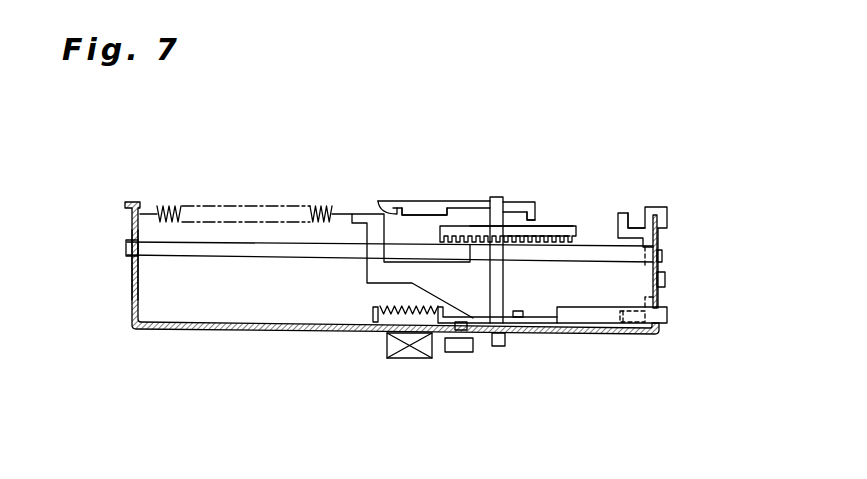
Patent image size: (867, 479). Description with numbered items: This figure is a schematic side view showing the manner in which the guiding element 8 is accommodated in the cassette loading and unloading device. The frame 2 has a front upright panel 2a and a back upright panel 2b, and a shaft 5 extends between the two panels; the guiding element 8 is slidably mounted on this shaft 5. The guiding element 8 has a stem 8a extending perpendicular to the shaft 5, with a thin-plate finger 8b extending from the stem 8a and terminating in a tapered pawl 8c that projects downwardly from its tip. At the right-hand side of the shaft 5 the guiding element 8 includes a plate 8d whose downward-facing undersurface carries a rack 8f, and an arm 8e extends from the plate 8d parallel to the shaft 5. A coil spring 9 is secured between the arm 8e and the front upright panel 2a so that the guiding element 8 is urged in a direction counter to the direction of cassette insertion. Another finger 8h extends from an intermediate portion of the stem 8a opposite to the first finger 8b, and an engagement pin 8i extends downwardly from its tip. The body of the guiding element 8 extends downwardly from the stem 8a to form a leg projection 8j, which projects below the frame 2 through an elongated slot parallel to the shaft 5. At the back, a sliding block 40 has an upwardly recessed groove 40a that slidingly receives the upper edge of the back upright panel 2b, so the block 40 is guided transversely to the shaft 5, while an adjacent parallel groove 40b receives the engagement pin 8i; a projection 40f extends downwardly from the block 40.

The frame 2 is at (255, 330).
The front upright panel 2a is at (132, 275).
The back upright panel 2b is at (665, 300).
The shaft 5 is at (255, 248).
The guiding element 8 is at (428, 198).
The stem 8a is at (498, 200).
The finger 8b is at (452, 207).
The tapered pawl 8c is at (398, 212).
The plate 8d is at (577, 226).
The arm 8e is at (368, 213).
The rack 8f is at (528, 242).
The finger 8h is at (533, 213).
The engagement pin 8i is at (537, 218).
The leg projection 8j is at (497, 347).
The coil spring 9 is at (182, 204).
The sliding block 40 is at (662, 205).
The groove 40a is at (663, 228).
The groove 40b is at (633, 212).
The projection 40f is at (623, 325).